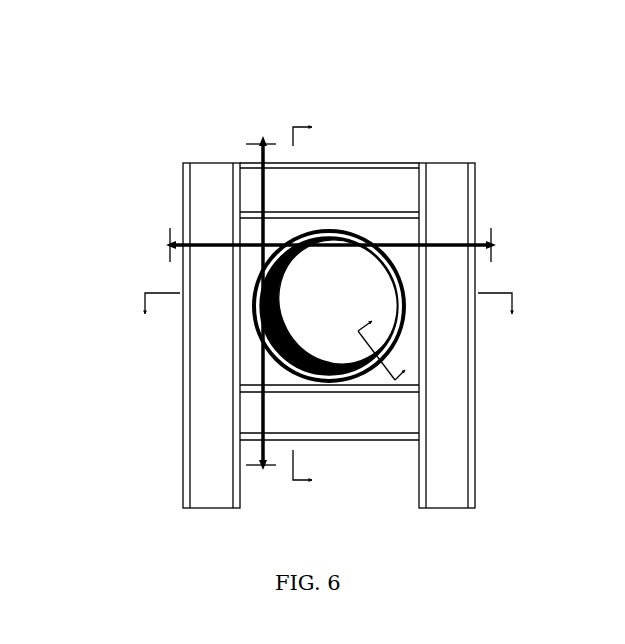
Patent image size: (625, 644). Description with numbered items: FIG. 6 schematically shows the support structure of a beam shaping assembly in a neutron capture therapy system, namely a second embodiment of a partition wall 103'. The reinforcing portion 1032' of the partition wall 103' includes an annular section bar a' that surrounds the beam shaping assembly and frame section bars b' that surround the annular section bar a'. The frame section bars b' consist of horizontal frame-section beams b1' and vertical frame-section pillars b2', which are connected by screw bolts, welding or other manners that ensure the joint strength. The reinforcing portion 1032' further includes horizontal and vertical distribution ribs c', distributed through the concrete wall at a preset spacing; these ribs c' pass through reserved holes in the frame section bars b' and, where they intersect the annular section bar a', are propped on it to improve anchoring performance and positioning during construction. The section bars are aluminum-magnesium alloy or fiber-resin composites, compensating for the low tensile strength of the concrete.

The partition wall 103' is at (284, 288).
The reinforcing portion 1032' is at (302, 320).
The annular section bar a' is at (279, 246).
The frame section bars b' is at (186, 335).
The horizontal frame-section beams b1' is at (341, 175).
The vertical frame-section pillars b2' is at (472, 335).
The horizontal and vertical distribution ribs c' is at (279, 302).